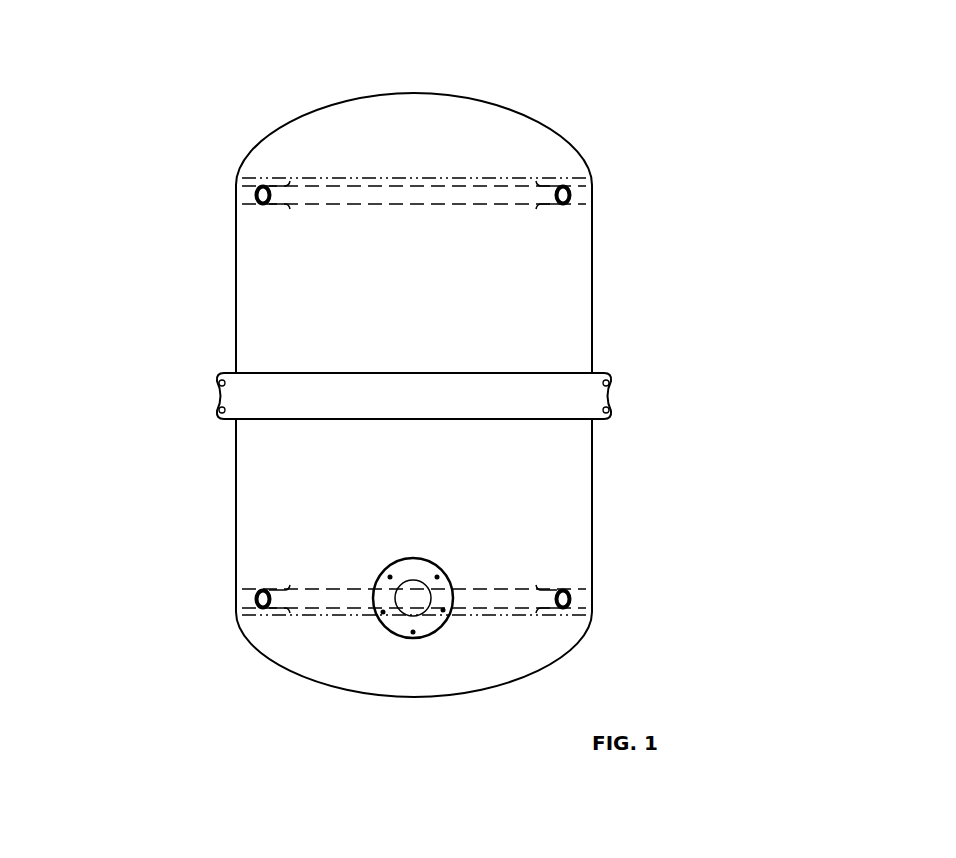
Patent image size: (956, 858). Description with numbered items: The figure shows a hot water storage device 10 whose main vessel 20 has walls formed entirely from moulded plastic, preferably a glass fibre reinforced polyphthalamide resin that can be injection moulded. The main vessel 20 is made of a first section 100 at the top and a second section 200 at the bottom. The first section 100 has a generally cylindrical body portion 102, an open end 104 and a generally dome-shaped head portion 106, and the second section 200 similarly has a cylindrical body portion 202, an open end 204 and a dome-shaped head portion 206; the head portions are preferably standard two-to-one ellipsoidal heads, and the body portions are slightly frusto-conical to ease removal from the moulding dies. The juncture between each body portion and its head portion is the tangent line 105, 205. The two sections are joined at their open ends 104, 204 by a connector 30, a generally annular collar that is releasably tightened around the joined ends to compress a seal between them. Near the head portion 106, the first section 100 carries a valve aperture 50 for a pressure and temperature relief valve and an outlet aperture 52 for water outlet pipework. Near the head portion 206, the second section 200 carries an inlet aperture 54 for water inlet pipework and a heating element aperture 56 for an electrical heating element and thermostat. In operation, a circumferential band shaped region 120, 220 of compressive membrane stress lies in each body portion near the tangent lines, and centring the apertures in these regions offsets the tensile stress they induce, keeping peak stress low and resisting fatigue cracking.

The hot water storage device 10 is at (665, 192).
The main vessel 20 is at (300, 112).
The connector 30 is at (575, 397).
The valve aperture 50 is at (250, 192).
The outlet aperture 52 is at (570, 182).
The inlet aperture 54 is at (580, 596).
The heating element aperture 56 is at (425, 612).
The first section 100 is at (568, 331).
The body portion 102 is at (232, 270).
The open end 104 is at (228, 368).
The tangent line 105 is at (315, 177).
The head portion 106 is at (455, 97).
The circumferential band shaped region 120 is at (488, 195).
The second section 200 is at (547, 519).
The body portion 202 is at (235, 559).
The open end 204 is at (228, 428).
The tangent line 205 is at (495, 615).
The head portion 206 is at (285, 672).
The circumferential band shaped region 220 is at (358, 600).